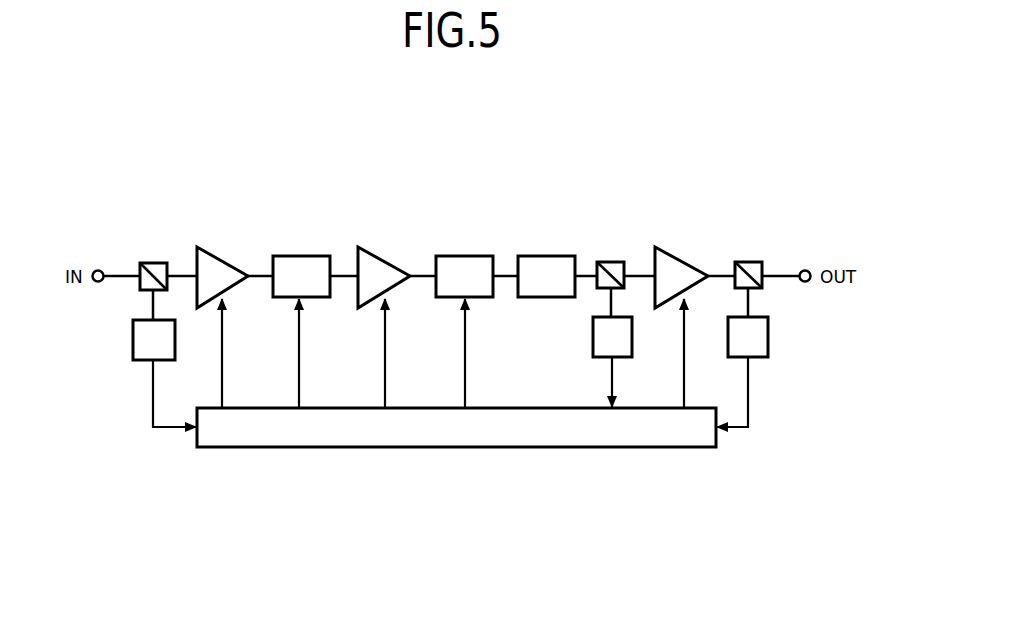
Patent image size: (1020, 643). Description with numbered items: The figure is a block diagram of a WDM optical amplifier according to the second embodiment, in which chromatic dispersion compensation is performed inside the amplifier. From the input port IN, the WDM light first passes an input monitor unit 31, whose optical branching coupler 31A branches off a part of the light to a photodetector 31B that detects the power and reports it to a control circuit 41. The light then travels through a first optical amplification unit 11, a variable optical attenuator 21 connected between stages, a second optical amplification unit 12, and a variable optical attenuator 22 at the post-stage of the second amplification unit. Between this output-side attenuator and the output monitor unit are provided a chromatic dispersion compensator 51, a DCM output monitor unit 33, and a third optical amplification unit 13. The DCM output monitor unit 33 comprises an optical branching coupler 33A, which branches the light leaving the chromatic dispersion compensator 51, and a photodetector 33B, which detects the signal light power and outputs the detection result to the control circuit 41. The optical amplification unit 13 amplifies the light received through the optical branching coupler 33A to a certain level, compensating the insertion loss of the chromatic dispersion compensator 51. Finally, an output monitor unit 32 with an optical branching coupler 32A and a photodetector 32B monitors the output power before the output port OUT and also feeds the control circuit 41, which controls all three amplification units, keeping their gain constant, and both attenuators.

The input monitor unit 31 is at (166, 198).
The optical branching coupler 31A is at (153, 263).
The photodetector 31B is at (142, 362).
The optical amplification unit 11 is at (211, 257).
The variable optical attenuator 21 is at (299, 256).
The optical amplification unit 12 is at (380, 257).
The variable optical attenuator 22 is at (467, 256).
The chromatic dispersion compensator 51 is at (550, 256).
The DCM output monitor unit 33 is at (600, 198).
The optical branching coupler 33A is at (611, 262).
The photodetector 33B is at (623, 360).
The optical amplification unit 13 is at (679, 257).
The output monitor unit 32 is at (742, 198).
The optical branching coupler 32A is at (748, 262).
The photodetector 32B is at (763, 362).
The control circuit 41 is at (425, 450).